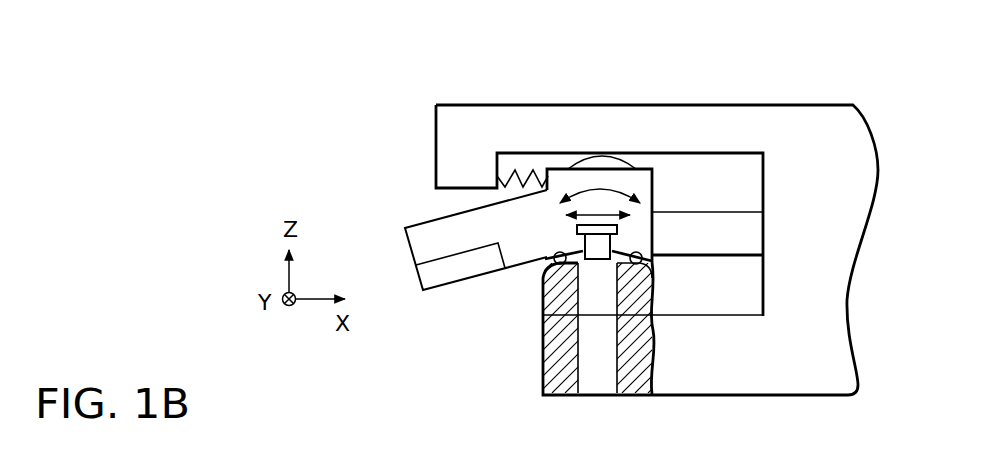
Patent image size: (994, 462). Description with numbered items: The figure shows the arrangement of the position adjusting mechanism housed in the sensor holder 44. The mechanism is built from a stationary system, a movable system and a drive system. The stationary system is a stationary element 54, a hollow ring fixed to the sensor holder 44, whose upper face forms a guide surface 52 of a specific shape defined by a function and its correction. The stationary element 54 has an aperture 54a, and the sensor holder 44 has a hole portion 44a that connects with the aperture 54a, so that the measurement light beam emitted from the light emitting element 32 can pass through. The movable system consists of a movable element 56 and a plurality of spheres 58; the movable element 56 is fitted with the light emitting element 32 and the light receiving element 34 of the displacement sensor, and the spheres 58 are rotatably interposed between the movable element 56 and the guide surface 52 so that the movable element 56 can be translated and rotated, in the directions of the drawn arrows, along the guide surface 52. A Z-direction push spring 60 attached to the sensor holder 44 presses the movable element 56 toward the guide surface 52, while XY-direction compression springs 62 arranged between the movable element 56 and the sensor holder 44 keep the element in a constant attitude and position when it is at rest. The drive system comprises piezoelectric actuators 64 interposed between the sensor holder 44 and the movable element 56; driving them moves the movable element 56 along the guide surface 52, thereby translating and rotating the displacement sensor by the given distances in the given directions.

The sensor holder 44 is at (774, 105).
The hole portion 44a is at (615, 378).
The actuators 64 is at (745, 212).
The compression springs 62 is at (520, 170).
The push spring 60 is at (624, 158).
The movable element 56 is at (420, 222).
The light receiving element 34 is at (432, 288).
The light emitting element 32 is at (597, 247).
The spheres 58 is at (554, 252).
The stationary element 54 is at (570, 322).
The aperture 54a is at (565, 318).
The guide surface 52 is at (652, 268).